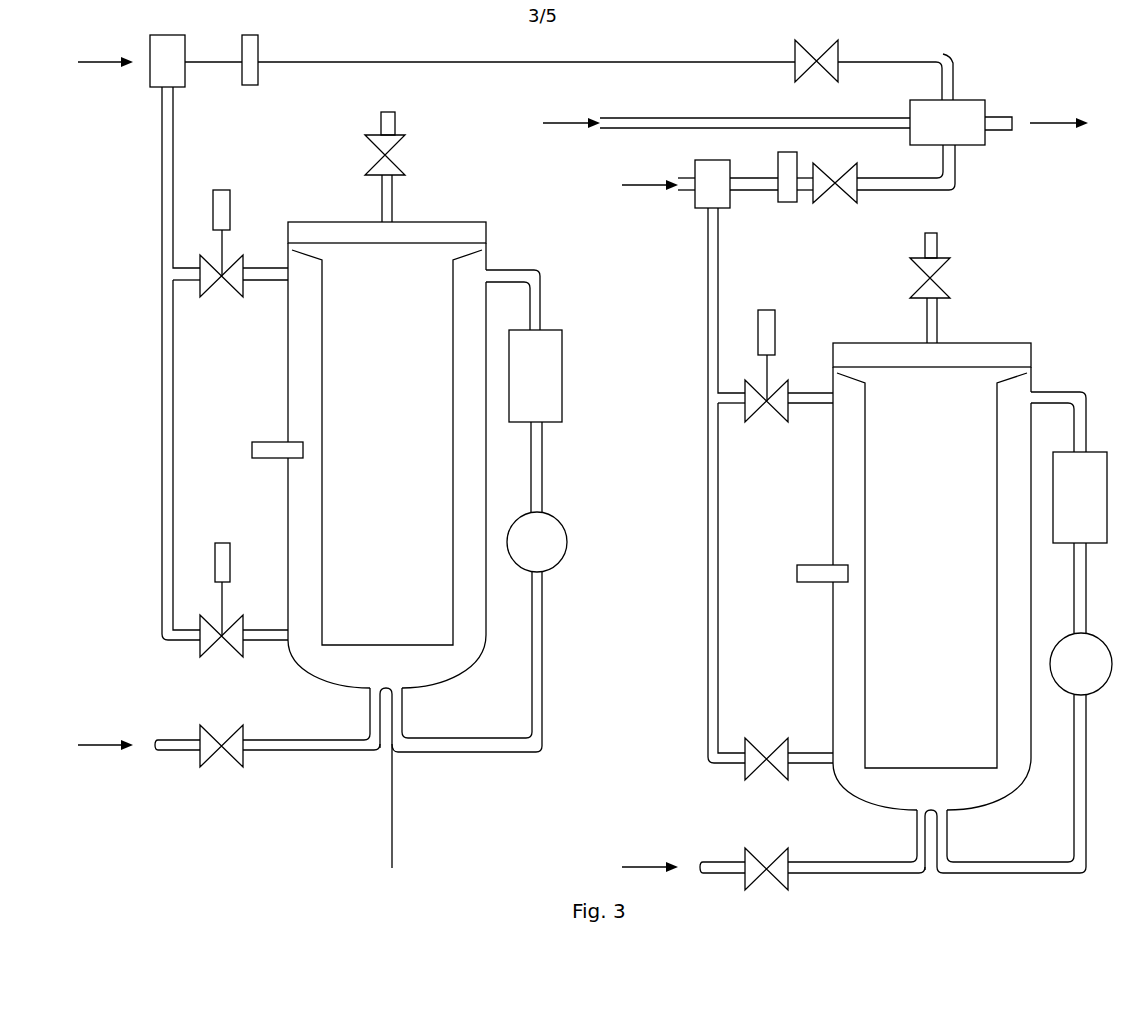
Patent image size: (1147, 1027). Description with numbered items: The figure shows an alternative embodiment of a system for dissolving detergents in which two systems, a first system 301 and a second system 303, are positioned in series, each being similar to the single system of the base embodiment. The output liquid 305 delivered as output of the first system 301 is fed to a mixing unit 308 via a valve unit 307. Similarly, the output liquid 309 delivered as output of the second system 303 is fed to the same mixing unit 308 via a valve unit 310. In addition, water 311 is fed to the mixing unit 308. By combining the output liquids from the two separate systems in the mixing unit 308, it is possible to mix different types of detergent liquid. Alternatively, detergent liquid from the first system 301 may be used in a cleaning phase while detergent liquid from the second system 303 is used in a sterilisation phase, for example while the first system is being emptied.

The first system 301 is at (445, 212).
The second system 303 is at (972, 323).
The output liquid 305 is at (950, 65).
The valve unit 307 is at (833, 70).
The mixing unit 308 is at (973, 128).
The output liquid 309 is at (947, 188).
The valve unit 310 is at (840, 187).
The water 311 is at (585, 123).